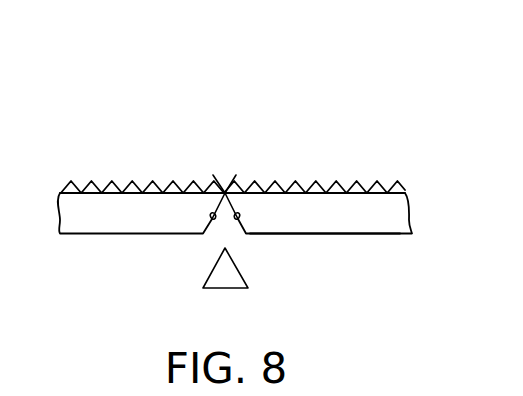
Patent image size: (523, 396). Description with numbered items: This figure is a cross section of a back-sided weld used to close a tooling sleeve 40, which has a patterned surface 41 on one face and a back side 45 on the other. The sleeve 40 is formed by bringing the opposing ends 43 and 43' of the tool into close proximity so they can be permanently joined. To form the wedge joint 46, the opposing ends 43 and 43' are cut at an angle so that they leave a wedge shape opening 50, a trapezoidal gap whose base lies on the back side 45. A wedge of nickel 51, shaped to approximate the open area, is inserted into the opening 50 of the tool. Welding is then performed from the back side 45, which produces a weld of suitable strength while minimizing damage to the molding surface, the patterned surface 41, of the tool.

The sleeve 40 is at (134, 149).
The patterned surface 41 is at (378, 181).
The opposing end 43 is at (207, 180).
The opposing end 43' is at (257, 179).
The back side 45 is at (334, 234).
The wedge joint 46 is at (226, 190).
The wedge shape opening 50 is at (214, 239).
The wedge of nickel 51 is at (228, 281).